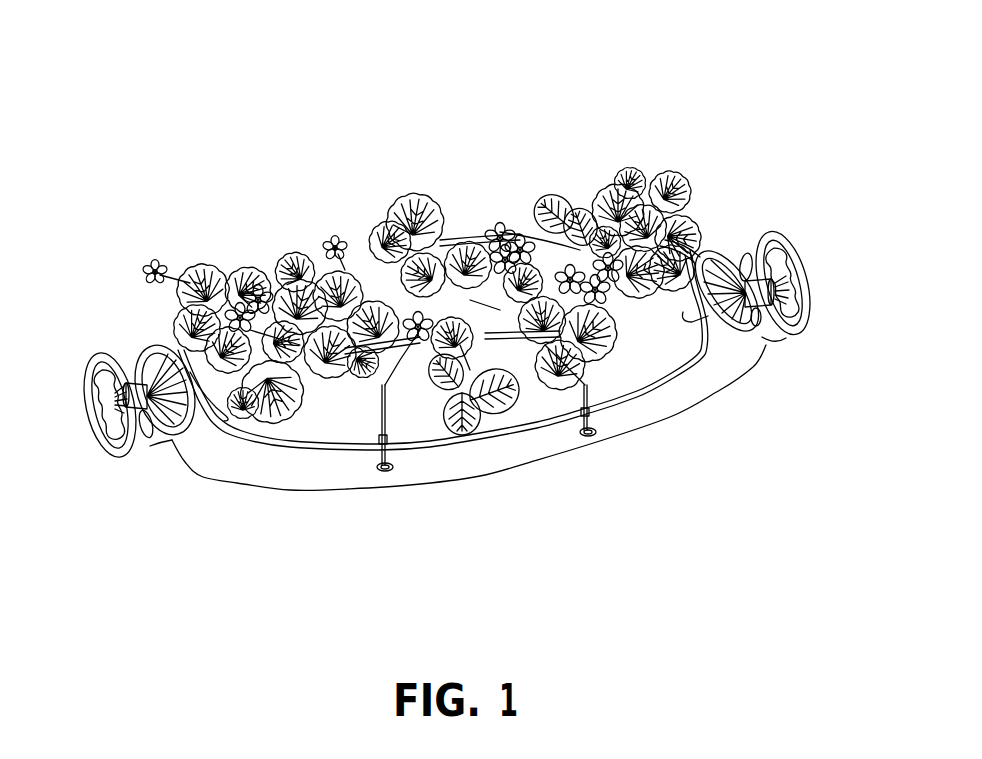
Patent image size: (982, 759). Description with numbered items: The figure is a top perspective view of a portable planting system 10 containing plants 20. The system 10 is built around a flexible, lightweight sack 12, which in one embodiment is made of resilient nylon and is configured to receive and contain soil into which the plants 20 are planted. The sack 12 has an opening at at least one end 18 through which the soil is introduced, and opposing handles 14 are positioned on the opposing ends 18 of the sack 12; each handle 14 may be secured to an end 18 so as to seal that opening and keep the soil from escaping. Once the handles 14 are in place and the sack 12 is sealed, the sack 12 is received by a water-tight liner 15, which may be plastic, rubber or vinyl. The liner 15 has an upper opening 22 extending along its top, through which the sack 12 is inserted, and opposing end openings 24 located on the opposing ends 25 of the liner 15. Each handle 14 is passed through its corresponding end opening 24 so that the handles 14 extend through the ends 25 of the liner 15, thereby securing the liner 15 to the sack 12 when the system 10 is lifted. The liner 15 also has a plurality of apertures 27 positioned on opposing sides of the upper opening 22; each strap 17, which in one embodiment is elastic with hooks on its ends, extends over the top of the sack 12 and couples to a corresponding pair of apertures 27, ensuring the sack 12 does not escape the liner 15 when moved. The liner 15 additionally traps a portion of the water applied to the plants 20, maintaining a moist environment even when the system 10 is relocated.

The portable planting system 10 is at (457, 55).
The sack 12 is at (660, 352).
The handles 14 is at (98, 388).
The liner 15 is at (227, 467).
The straps 17 is at (387, 413).
The end 18 is at (170, 427).
The plants 20 is at (420, 203).
The upper opening 22 is at (290, 443).
The end openings 24 is at (147, 361).
The ends 25 is at (146, 458).
The apertures 27 is at (370, 467).